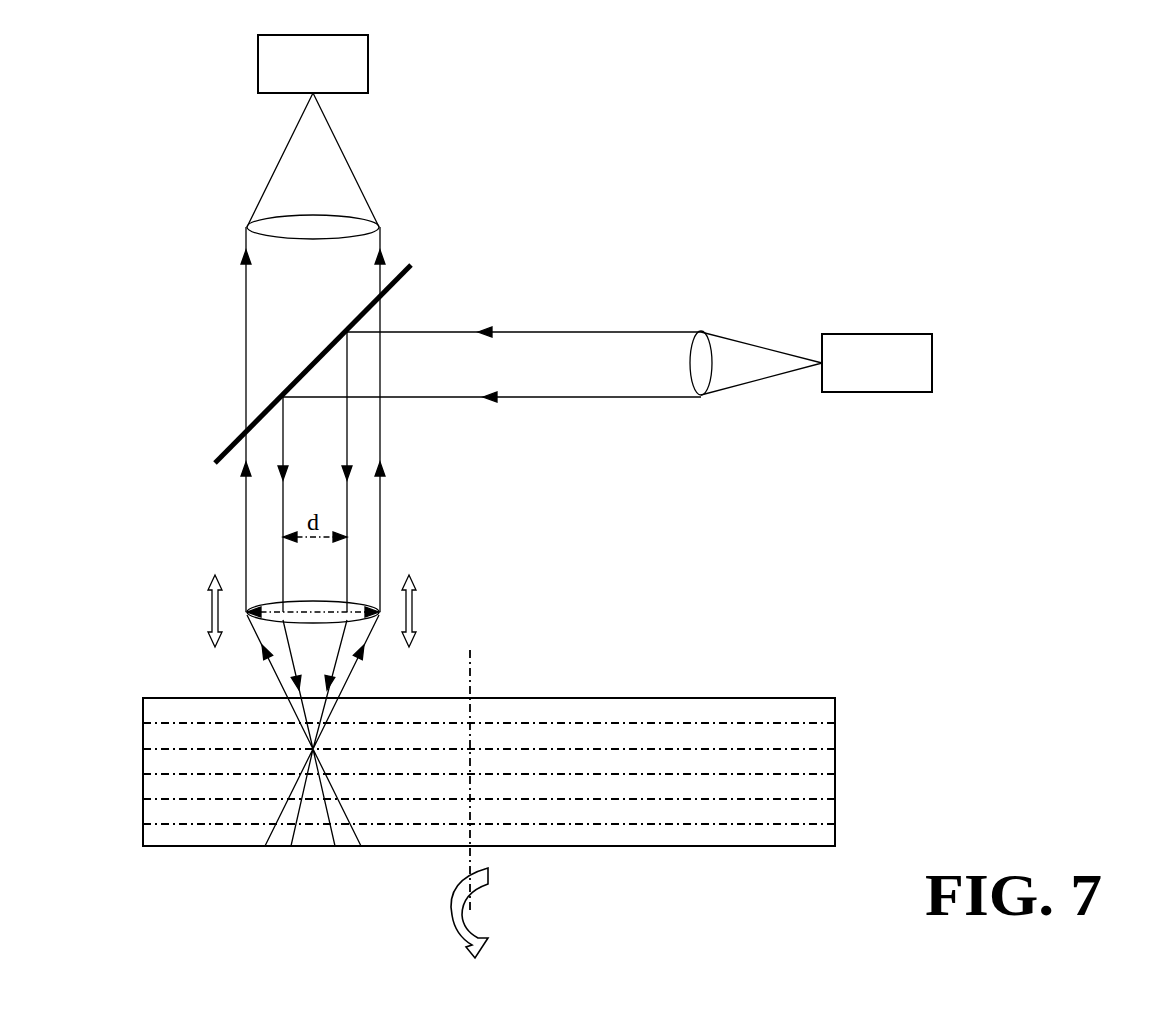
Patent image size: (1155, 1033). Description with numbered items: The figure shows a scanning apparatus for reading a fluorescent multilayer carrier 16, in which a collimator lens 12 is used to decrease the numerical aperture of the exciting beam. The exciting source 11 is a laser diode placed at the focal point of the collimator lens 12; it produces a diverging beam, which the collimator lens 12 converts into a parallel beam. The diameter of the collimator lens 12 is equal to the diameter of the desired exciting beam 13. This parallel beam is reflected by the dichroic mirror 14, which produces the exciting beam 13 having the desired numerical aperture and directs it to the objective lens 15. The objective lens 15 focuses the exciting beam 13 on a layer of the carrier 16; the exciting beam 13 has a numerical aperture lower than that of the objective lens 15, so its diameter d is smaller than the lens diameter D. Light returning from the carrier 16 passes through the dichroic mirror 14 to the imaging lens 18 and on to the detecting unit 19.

The exciting source 11 is at (880, 334).
The collimator lens 12 is at (701, 334).
The exciting beam 13 is at (347, 425).
The dichroic mirror 14 is at (228, 448).
The objective lens 15 is at (377, 612).
The fluorescent multilayer carrier 16 is at (835, 785).
The imaging lens 18 is at (378, 222).
The detecting unit 19 is at (368, 63).